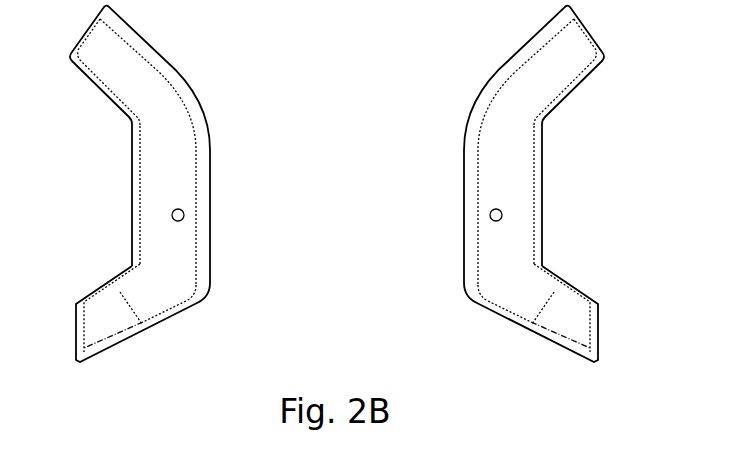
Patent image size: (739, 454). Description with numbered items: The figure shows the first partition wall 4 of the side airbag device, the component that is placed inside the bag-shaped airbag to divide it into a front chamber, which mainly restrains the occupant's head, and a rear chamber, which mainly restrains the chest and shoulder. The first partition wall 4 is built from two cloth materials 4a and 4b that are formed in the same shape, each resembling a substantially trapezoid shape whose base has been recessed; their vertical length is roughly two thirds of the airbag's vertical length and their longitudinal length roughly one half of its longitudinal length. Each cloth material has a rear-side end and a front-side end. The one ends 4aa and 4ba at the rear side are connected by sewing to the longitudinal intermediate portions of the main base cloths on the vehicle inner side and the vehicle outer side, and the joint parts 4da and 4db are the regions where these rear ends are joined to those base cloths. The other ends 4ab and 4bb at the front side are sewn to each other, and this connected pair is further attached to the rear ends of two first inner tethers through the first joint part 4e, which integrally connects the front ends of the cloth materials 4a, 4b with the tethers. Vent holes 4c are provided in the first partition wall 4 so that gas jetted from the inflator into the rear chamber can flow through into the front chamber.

The first partition wall 4 is at (343, 191).
The cloth material 4a is at (193, 145).
The cloth material 4b is at (490, 145).
The one end of cloth material 4aa is at (207, 245).
The other end of cloth material 4ab is at (132, 152).
The one end of cloth material 4ba is at (467, 248).
The other end of cloth material 4bb is at (545, 180).
The vent hole 4c is at (185, 213).
The joint part 4da is at (160, 58).
The joint part 4db is at (523, 53).
The first joint part 4e is at (137, 337).